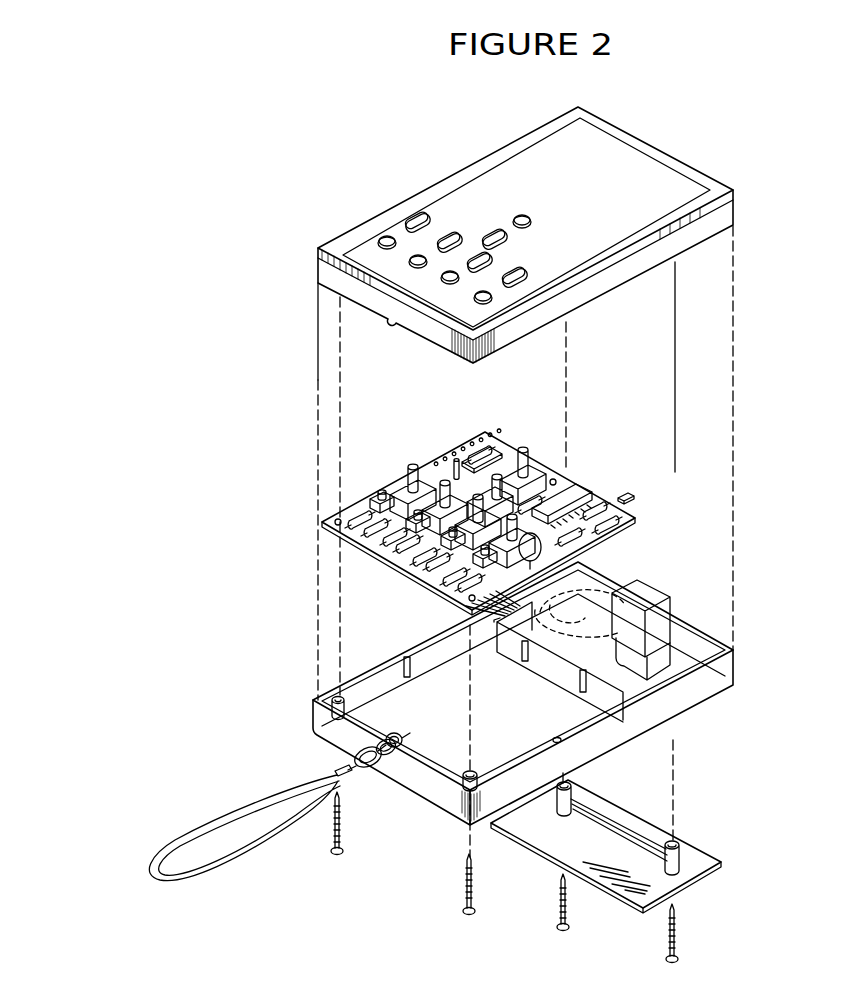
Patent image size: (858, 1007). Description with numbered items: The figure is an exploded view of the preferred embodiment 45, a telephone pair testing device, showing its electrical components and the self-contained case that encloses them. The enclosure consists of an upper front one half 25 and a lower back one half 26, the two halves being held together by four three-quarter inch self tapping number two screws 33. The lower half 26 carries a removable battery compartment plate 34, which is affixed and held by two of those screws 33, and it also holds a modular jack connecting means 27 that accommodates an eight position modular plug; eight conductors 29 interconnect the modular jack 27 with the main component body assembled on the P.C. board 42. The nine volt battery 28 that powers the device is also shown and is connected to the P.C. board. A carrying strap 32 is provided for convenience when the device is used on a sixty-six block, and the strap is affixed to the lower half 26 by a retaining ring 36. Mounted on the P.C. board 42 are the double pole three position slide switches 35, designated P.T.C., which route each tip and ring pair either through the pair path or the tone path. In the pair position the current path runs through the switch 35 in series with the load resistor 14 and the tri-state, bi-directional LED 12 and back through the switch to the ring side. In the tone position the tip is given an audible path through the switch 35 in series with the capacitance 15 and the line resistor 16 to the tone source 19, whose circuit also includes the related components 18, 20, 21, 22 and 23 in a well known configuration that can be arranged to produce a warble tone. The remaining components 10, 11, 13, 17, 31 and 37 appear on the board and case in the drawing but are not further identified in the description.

The preferred embodiment 45 is at (277, 445).
The upper front one half 25 is at (700, 233).
The lower back one half 26 is at (690, 697).
The P.C. board 42 is at (505, 494).
The switch 10 is at (388, 482).
The switch plunger 11 is at (533, 448).
The tri-state, bi-directional LED 12 is at (376, 490).
The resistor 13 is at (355, 516).
The load resistor 14 is at (372, 536).
The capacitance 15 is at (552, 548).
The line resistor 16 is at (582, 537).
The resistor 17 is at (621, 527).
The tone source related component 18 is at (628, 492).
The tone source 19 is at (608, 496).
The tone source related component 20 is at (583, 482).
The tone source related component 21 is at (555, 465).
The tone source related component 22 is at (511, 447).
The tone source related component 23 is at (508, 445).
The modular jack connecting means 27 is at (668, 583).
The nine volt battery 28 is at (660, 614).
The eight conductors 29 is at (490, 619).
The ring 31 is at (393, 770).
The carrying strap 32 is at (252, 860).
The self tapping screws 33 is at (347, 853).
The removable battery compartment plate 34 is at (712, 846).
The double pole three position slide switch 35 is at (408, 456).
The retaining ring 36 is at (388, 727).
The plunger 37 is at (452, 452).